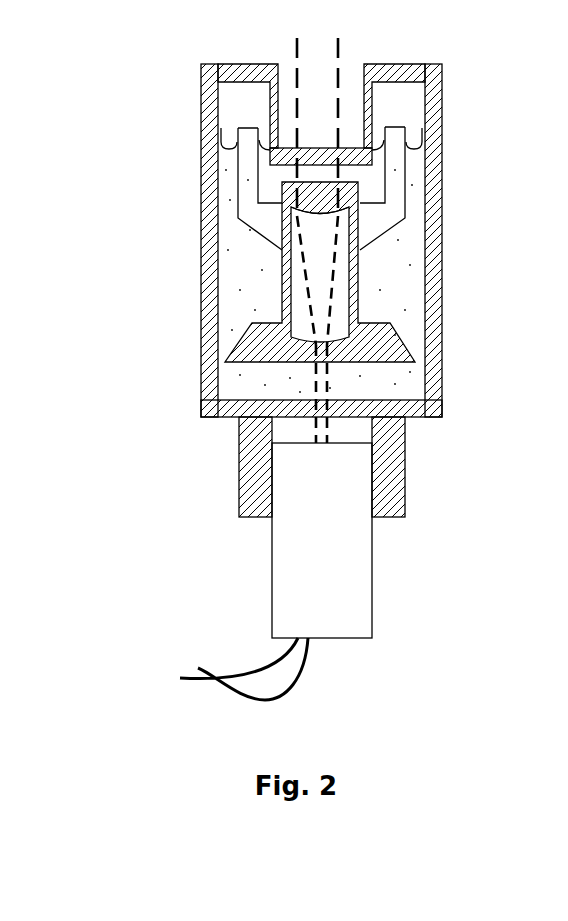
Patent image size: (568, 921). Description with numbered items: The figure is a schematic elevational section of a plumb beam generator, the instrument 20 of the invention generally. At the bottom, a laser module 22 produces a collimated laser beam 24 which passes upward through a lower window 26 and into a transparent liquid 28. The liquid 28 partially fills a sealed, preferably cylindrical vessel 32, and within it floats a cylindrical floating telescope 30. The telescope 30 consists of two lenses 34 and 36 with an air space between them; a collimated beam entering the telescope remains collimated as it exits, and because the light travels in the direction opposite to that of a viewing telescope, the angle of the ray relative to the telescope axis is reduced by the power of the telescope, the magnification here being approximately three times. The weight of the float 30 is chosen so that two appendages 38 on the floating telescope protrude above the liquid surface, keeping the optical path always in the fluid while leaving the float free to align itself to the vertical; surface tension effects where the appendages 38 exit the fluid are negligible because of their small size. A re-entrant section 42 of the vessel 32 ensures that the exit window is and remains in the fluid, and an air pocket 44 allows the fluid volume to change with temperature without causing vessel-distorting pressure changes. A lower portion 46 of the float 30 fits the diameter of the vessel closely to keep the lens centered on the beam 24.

The instrument 20 is at (107, 100).
The laser module 22 is at (372, 607).
The collimated laser beam 24 is at (337, 430).
The lower window 26 is at (333, 398).
The transparent liquid 28 is at (382, 380).
The floating telescope 30 is at (360, 294).
The vessel 32 is at (428, 293).
The lens 34 is at (313, 338).
The lens 36 is at (349, 212).
The appendages 38 is at (235, 128).
The re-entrant section 42 is at (393, 127).
The air pocket 44 is at (237, 98).
The lower portion 46 is at (233, 365).